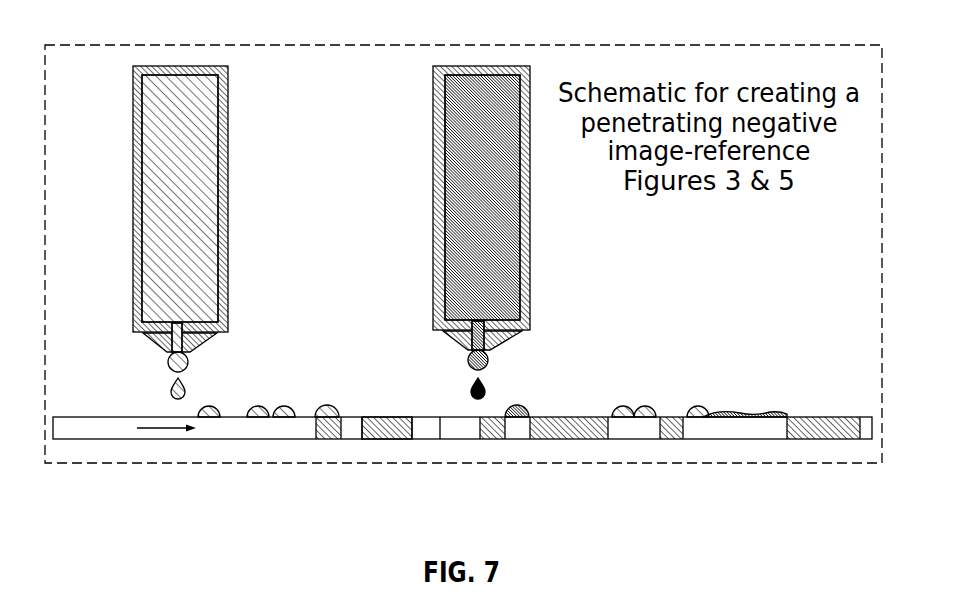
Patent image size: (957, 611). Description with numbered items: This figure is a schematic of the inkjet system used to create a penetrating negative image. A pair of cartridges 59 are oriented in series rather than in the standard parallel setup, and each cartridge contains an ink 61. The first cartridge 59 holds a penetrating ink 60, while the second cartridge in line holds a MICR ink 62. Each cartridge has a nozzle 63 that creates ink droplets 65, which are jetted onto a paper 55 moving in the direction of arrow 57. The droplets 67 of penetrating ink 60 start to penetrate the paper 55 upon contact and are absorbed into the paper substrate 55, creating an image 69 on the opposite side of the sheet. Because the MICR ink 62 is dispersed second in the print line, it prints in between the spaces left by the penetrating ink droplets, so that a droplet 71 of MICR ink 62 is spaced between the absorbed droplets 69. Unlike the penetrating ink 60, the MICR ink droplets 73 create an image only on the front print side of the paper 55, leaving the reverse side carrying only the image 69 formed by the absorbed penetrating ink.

The paper 55 is at (100, 440).
The arrow 57 is at (165, 440).
The cartridge 59 is at (236, 72).
The penetrating ink 60 is at (204, 221).
The ink 61 is at (435, 160).
The MICR ink 62 is at (522, 213).
The nozzle 63 is at (450, 337).
The ink droplets 65 is at (205, 375).
The droplets of penetrating ink 67 is at (258, 418).
The image 69 is at (388, 440).
The droplet of MICR ink 71 is at (521, 410).
The MICR ink droplets 73 is at (745, 418).